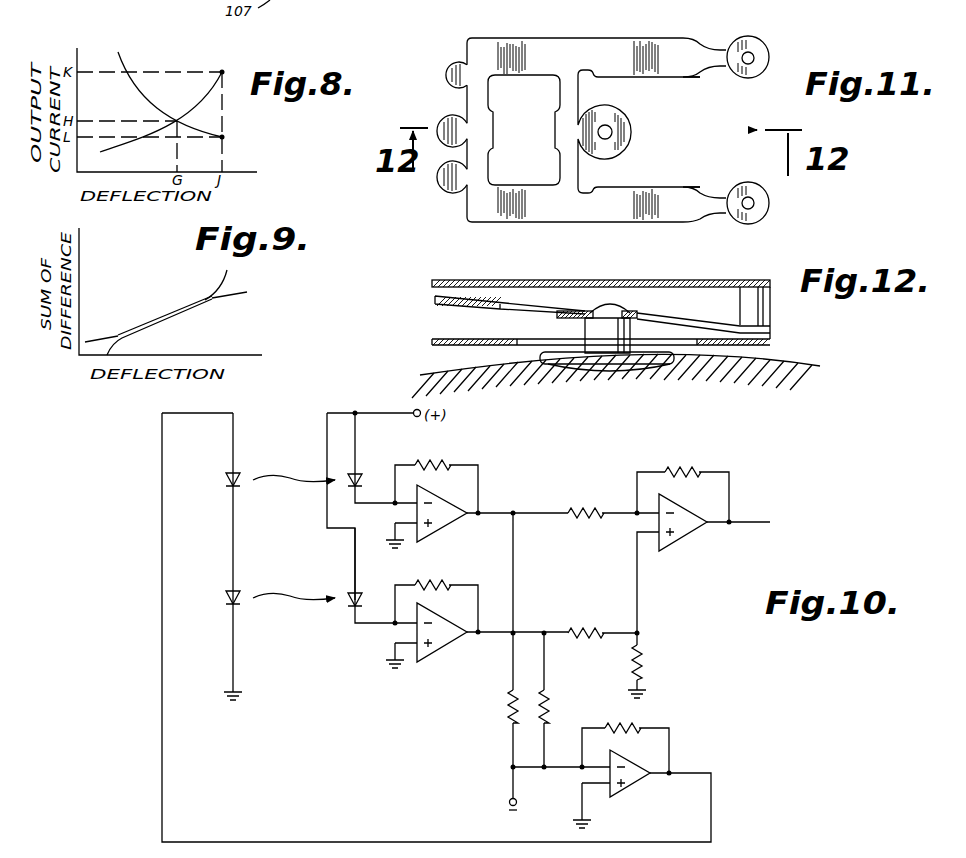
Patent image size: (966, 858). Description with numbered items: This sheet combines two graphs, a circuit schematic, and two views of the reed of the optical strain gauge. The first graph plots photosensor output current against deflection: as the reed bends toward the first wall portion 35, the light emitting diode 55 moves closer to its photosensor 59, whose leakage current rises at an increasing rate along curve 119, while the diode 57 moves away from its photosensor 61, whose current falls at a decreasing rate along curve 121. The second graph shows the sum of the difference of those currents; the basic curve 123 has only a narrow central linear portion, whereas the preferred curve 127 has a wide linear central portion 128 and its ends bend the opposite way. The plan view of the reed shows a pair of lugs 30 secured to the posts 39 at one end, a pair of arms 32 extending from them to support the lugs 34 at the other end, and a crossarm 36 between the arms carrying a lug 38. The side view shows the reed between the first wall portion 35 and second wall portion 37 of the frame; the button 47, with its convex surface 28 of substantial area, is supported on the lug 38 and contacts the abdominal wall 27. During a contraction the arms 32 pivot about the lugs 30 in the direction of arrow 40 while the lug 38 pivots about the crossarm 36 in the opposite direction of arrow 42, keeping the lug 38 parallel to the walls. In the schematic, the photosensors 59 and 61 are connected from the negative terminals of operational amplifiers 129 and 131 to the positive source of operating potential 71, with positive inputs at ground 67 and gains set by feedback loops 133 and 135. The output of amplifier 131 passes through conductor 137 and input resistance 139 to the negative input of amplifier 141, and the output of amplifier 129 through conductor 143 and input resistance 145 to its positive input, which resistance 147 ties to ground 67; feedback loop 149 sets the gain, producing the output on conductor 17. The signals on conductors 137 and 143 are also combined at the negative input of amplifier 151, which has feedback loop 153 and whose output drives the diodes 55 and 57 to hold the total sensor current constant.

In FIG. 8, the curve 121 is at (122, 63).
In FIG. 8, the curve 119 is at (197, 103).
In FIG. 9, the central portion 128 is at (160, 307).
In FIG. 9, the sum of the difference curve 127 is at (90, 341).
In FIG. 9, the sum of the difference curve 123 is at (113, 342).
In FIG. 11, the lugs 30 is at (772, 46).
In FIG. 12, the lugs 30 is at (762, 331).
In FIG. 11, the arms 32 is at (612, 48).
In FIG. 11, the lugs 34 is at (456, 80).
In FIG. 12, the lugs 34 is at (491, 266).
In FIG. 11, the crossarm 36 is at (566, 97).
In FIG. 12, the crossarm 36 is at (562, 316).
In FIG. 11, the lug 38 is at (617, 118).
In FIG. 12, the lug 38 is at (637, 319).
In FIG. 12, the first wall portion 35 is at (721, 280).
In FIG. 12, the second wall portion 37 is at (478, 342).
In FIG. 12, the posts 39 is at (762, 306).
In FIG. 12, the arrow 42 is at (627, 300).
In FIG. 12, the arrow 40 is at (421, 293).
In FIG. 12, the particular surface 28 is at (628, 372).
In FIG. 12, the button 47 is at (590, 360).
In FIG. 12, the abdominal wall 27 is at (718, 372).
In FIG. 10, the ground 67 is at (240, 691).
In FIG. 10, the positive source of operating potential 71 is at (411, 407).
In FIG. 10, the light emitting diode 55 is at (224, 486).
In FIG. 10, the diode 57 is at (225, 602).
In FIG. 10, the photosensor 61 is at (362, 479).
In FIG. 10, the photosensor 59 is at (350, 607).
In FIG. 10, the operational amplifier 131 is at (445, 530).
In FIG. 10, the resistive feedback loop 135 is at (441, 462).
In FIG. 10, the operational amplifier 129 is at (446, 646).
In FIG. 10, the resistive feedback loop 133 is at (440, 583).
In FIG. 10, the conductor 137 is at (536, 503).
In FIG. 10, the input resistance 139 is at (572, 521).
In FIG. 10, the operational amplifier 141 is at (680, 539).
In FIG. 10, the resistive feedback loop 149 is at (678, 468).
In FIG. 10, the conductor 17 is at (752, 522).
In FIG. 10, the conductor 143 is at (535, 623).
In FIG. 10, the input resistance 145 is at (572, 641).
In FIG. 10, the resistance 147 is at (645, 660).
In FIG. 10, the resistive feedback loop 153 is at (625, 720).
In FIG. 10, the amplifier 151 is at (636, 782).